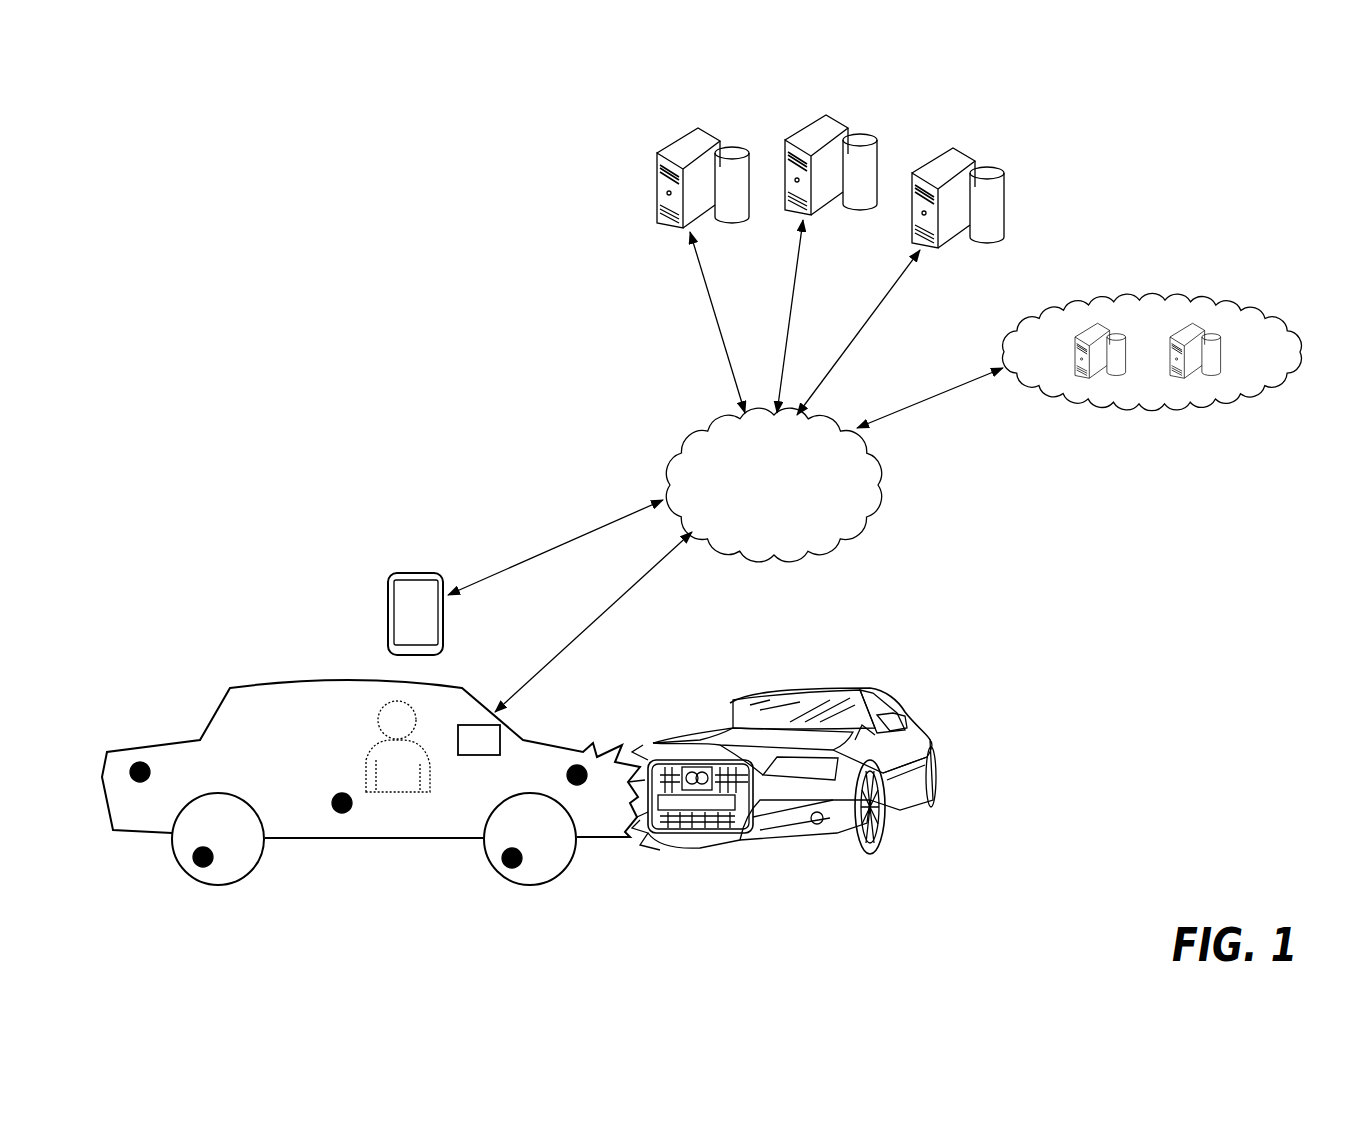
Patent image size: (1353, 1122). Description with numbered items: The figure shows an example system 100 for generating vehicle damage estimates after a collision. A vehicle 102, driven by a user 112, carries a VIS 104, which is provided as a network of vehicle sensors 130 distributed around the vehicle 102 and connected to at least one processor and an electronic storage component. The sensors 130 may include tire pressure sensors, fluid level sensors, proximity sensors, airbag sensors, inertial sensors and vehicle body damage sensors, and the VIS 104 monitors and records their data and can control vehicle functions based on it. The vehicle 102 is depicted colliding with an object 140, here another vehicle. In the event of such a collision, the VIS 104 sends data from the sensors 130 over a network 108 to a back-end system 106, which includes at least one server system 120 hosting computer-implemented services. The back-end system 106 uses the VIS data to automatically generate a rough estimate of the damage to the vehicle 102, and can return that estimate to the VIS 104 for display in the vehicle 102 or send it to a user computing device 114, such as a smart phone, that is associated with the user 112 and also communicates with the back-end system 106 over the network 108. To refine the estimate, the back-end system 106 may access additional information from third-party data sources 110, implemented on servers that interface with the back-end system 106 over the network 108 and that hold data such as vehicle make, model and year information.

The system 100 is at (413, 350).
The vehicle 102 is at (371, 781).
The VIS 104 is at (477, 725).
The back-end system 106 is at (1125, 300).
The network 108 is at (773, 485).
The third-party data sources 110 is at (950, 120).
The user 112 is at (400, 793).
The user computing device 114 is at (388, 613).
The server system 120 is at (1100, 373).
The vehicle sensors 130 is at (140, 762).
The object 140 is at (887, 693).